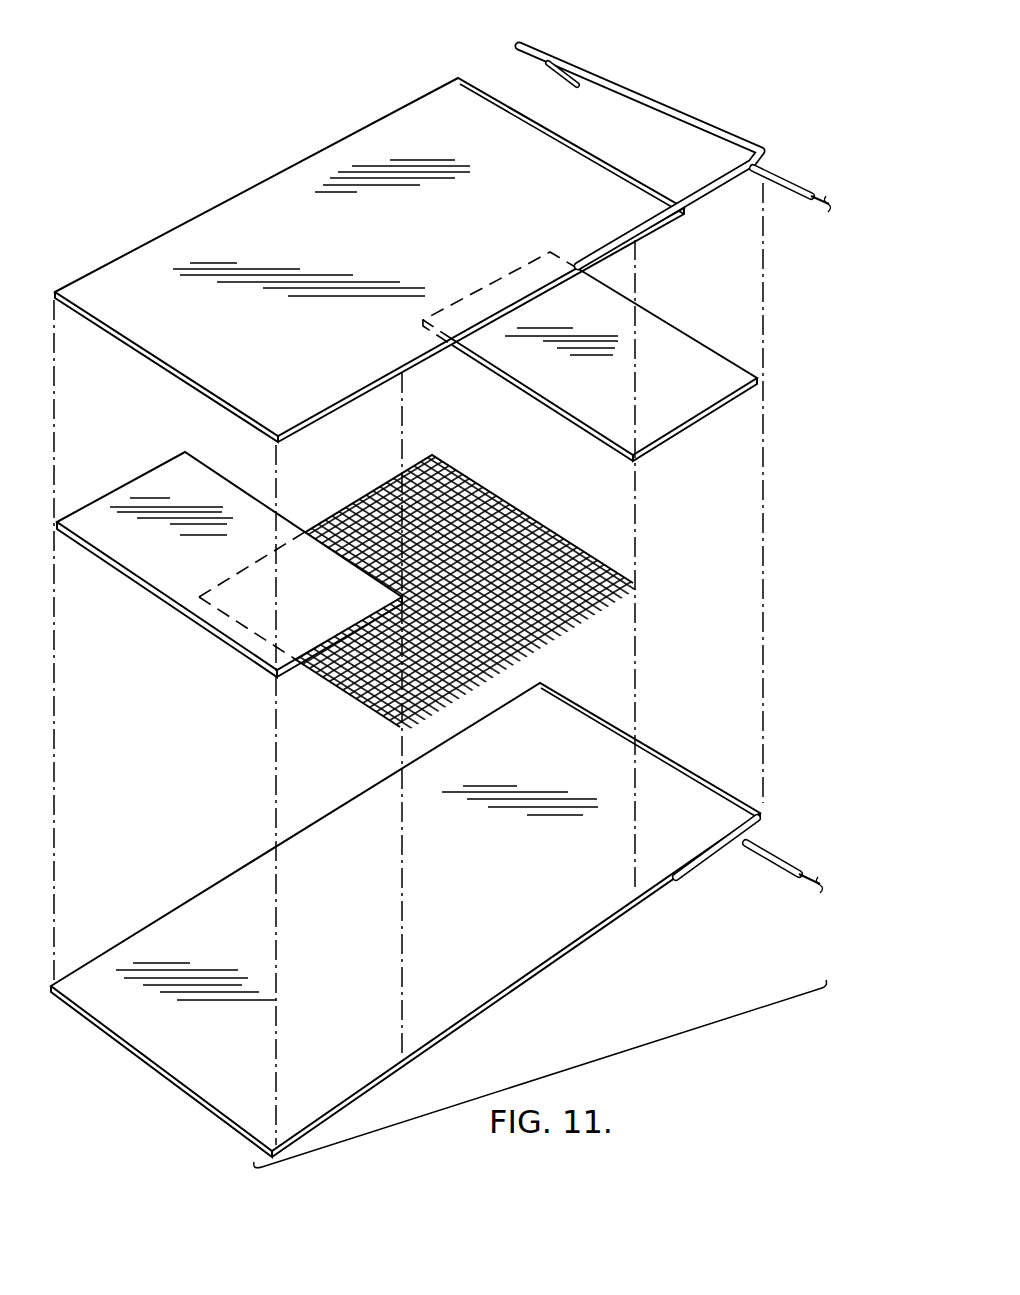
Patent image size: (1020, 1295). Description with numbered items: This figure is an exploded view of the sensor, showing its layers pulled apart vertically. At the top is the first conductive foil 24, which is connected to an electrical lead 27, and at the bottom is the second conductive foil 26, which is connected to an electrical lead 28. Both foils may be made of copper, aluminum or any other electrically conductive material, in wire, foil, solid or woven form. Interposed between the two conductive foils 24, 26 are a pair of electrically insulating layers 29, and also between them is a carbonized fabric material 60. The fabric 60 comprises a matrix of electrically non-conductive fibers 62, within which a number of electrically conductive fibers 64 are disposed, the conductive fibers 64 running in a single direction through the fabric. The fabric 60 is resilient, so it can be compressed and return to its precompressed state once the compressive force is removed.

The first conductive foil 24 is at (309, 184).
The second conductive foil 26 is at (548, 928).
The electrical lead 27 is at (785, 173).
The electrical lead 28 is at (781, 855).
The electrically insulating layers 29 is at (692, 347).
The carbonized fabric material 60 is at (581, 536).
The electrically non-conductive fibers 62 is at (343, 512).
The electrically conductive fibers 64 is at (613, 598).